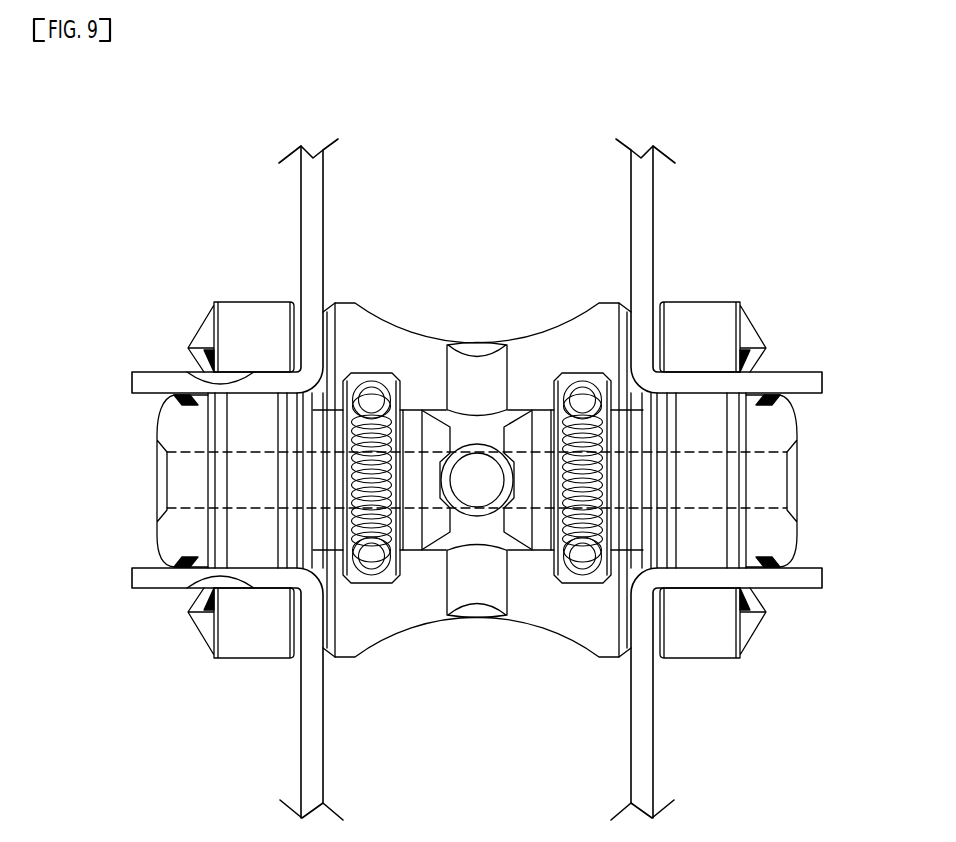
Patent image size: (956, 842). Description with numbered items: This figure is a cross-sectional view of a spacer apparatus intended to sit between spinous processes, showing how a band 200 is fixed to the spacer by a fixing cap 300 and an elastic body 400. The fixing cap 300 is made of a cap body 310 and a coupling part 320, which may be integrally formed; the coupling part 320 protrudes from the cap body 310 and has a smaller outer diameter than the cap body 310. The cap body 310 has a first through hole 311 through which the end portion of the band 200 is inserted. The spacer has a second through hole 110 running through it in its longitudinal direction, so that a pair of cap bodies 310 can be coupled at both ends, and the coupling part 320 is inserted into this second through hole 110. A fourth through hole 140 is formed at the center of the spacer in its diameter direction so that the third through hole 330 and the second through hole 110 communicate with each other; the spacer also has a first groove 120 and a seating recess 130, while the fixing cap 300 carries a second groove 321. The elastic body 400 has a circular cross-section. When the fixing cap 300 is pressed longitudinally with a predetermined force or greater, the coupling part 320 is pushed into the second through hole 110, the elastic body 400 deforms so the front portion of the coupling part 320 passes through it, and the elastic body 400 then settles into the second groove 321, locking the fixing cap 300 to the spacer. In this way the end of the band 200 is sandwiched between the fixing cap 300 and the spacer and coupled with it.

The second through hole 110 is at (540, 407).
The first groove 120 is at (368, 386).
The seating recess 130 is at (549, 328).
The fourth through hole 140 is at (481, 490).
The band 200 is at (323, 228).
The fixing cap 300 is at (265, 285).
The cap body 310 is at (241, 318).
The first through hole 311 is at (253, 383).
The coupling part 320 is at (415, 384).
The second groove 321 is at (409, 422).
The third through hole 330 is at (253, 454).
The elastic body 400 is at (376, 586).